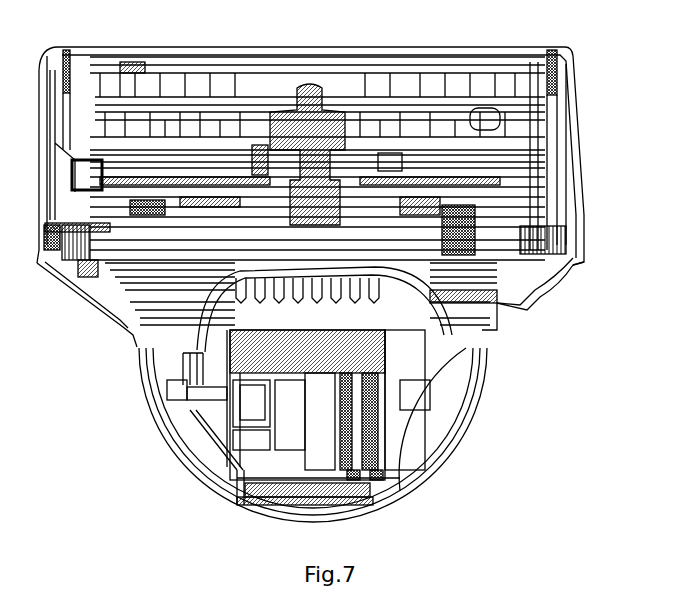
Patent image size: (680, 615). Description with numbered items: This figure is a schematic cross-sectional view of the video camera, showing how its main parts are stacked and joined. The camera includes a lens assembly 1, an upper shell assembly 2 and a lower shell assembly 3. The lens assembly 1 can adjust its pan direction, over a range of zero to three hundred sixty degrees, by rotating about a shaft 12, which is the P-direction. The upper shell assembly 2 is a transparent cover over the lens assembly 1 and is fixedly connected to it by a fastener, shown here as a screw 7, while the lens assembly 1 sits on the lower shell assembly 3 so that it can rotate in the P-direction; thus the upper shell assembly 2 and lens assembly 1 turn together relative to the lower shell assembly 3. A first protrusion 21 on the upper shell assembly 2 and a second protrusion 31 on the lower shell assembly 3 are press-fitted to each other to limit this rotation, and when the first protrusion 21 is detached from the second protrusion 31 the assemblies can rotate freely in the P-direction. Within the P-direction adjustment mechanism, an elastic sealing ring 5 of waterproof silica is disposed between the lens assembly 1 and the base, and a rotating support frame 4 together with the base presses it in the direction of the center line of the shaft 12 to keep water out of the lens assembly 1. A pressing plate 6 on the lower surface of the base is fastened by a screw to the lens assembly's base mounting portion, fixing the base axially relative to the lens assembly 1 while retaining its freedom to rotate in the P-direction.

The lens assembly 1 is at (372, 372).
The upper shell assembly 2 is at (527, 282).
The lower shell assembly 3 is at (573, 137).
The second protrusion 31 is at (558, 237).
The rotating support frame 4 is at (470, 265).
The elastic sealing ring 5 is at (385, 164).
The pressing plate 6 is at (242, 147).
The screw 7 is at (87, 270).
The shaft 12 is at (310, 215).
The first protrusion 21 is at (50, 248).